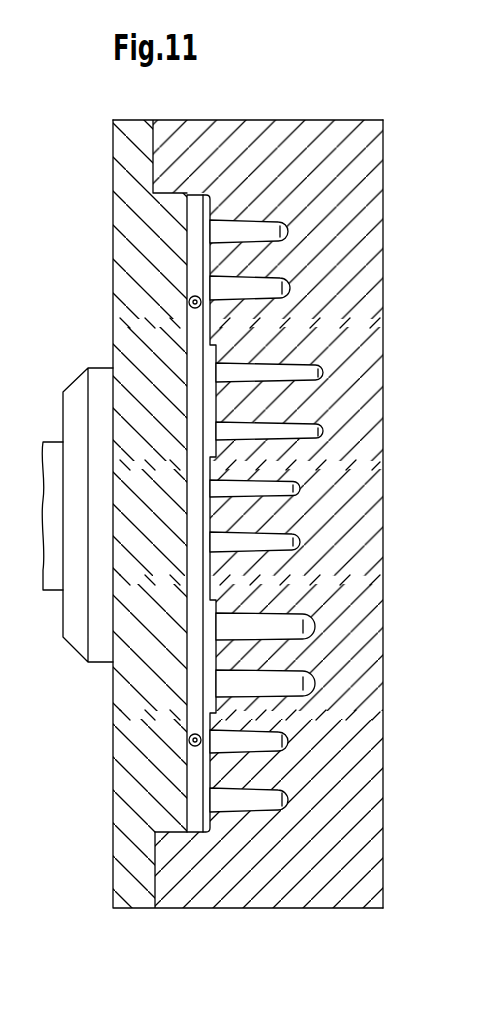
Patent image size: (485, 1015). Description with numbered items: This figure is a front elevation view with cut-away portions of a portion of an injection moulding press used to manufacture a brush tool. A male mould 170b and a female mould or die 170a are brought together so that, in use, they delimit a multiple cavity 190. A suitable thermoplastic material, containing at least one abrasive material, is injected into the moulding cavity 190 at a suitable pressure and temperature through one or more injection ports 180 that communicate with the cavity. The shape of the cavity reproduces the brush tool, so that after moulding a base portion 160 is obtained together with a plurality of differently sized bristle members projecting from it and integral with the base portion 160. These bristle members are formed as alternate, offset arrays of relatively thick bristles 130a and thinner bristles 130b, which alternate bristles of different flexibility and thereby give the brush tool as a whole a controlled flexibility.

The relatively thick bristles 130a is at (276, 290).
The thinner bristles 130b is at (320, 432).
The base portion 160 is at (193, 803).
The female mould or die 170a is at (207, 147).
The male mould 170b is at (140, 887).
The injection ports 180 is at (191, 294).
The multiple cavity 190 is at (193, 270).